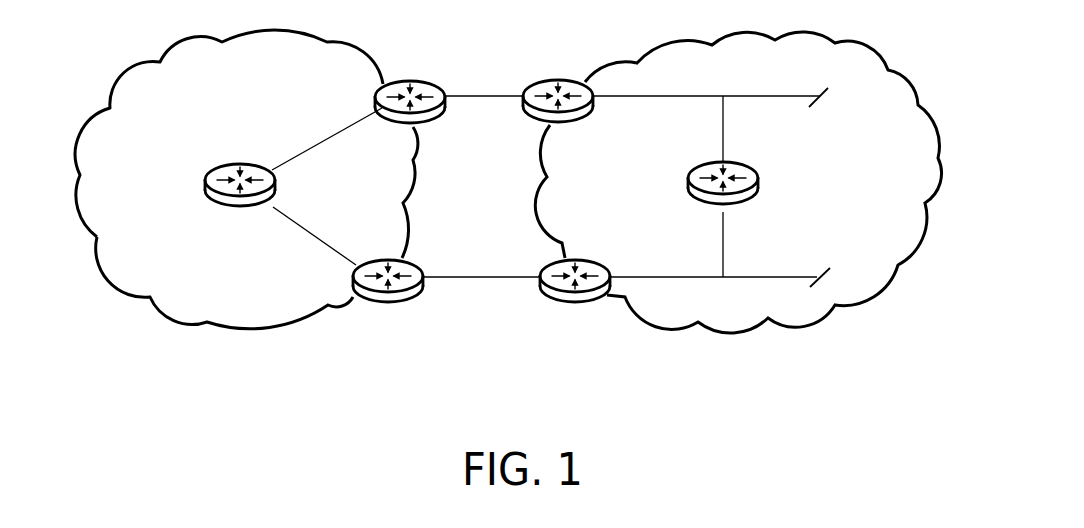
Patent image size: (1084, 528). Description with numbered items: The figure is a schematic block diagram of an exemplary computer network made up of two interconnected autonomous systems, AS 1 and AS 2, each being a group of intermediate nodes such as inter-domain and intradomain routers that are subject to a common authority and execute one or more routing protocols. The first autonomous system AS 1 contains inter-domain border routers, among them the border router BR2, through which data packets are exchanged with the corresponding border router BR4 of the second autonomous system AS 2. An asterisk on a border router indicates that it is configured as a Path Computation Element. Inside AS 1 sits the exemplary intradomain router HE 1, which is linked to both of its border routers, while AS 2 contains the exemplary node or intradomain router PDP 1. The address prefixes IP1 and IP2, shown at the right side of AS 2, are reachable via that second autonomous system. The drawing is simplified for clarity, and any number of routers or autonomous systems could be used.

The intradomain router HE 1 is at (230, 165).
The AS border router BR2 is at (386, 304).
The AS border router BR4 is at (575, 304).
The intradomain router PDP 1 is at (748, 163).
The address prefix IP1 is at (830, 82).
The address prefix IP2 is at (831, 262).
The autonomous system AS 1 is at (246, 179).
The autonomous system AS 2 is at (738, 182).